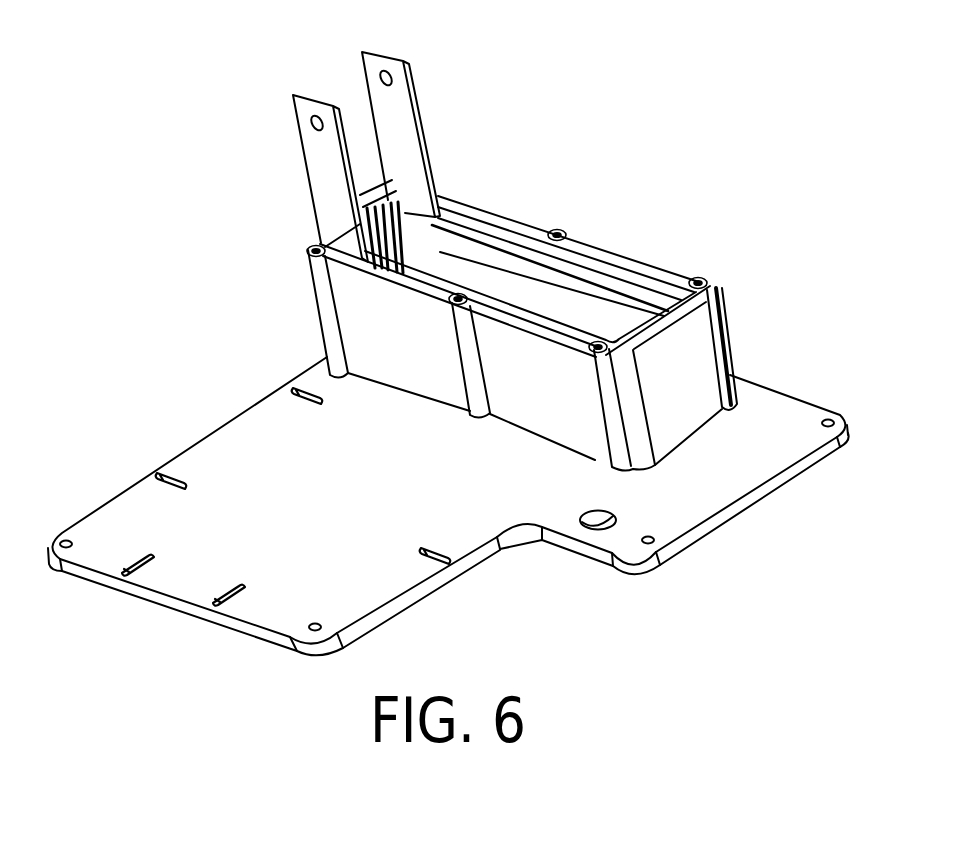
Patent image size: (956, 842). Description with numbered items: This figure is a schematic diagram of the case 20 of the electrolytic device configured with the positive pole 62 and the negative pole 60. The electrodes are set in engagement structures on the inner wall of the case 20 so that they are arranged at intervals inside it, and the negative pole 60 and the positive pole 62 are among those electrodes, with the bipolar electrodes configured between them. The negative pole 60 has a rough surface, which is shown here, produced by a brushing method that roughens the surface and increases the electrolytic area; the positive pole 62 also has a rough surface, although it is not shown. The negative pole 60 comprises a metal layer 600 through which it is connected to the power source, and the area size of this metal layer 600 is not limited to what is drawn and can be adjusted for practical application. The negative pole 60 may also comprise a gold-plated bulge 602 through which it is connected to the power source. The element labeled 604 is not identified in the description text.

The case 20 is at (687, 377).
The negative pole 60 is at (565, 297).
The metal layer 600 is at (447, 227).
The gold-plated bulge 602 is at (398, 157).
The inner wall 604 is at (493, 282).
The positive pole 62 is at (327, 178).